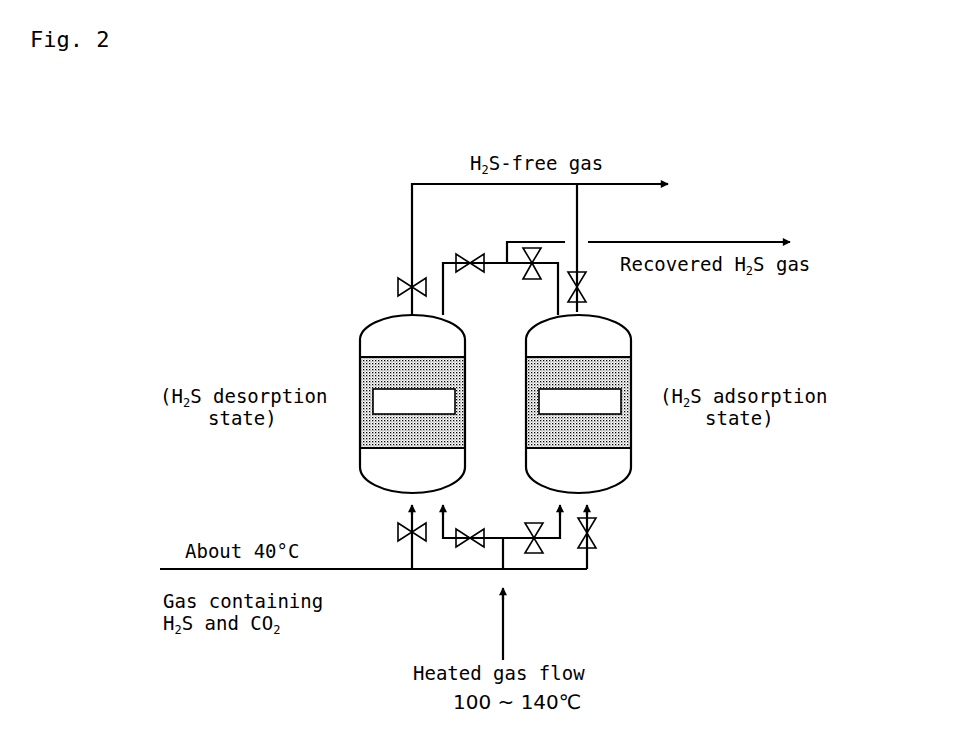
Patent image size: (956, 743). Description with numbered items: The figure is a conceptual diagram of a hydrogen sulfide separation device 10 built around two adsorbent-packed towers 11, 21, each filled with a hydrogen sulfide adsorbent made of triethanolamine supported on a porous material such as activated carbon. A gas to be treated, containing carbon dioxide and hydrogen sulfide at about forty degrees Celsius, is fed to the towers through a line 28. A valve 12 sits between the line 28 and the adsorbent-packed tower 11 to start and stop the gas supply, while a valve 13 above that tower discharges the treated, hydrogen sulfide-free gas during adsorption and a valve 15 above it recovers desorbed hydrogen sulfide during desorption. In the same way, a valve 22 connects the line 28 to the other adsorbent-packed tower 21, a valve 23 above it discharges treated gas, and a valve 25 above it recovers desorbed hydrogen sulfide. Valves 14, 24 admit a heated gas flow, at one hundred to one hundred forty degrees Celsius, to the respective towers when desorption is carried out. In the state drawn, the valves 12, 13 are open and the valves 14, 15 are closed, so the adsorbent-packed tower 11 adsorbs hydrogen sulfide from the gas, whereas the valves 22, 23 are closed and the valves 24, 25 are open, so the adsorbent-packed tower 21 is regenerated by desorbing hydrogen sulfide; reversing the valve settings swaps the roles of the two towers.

The hydrogen sulfide separation device 10 is at (353, 192).
The adsorbent-packed tower 11 is at (628, 335).
The valve 12 is at (592, 535).
The valve 13 is at (584, 291).
The valve 14 is at (530, 523).
The valve 15 is at (527, 273).
The adsorbent-packed tower 21 is at (376, 312).
The valve 22 is at (398, 532).
The valve 23 is at (406, 285).
The valve 24 is at (466, 532).
The valve 25 is at (459, 262).
The line 28 is at (375, 569).